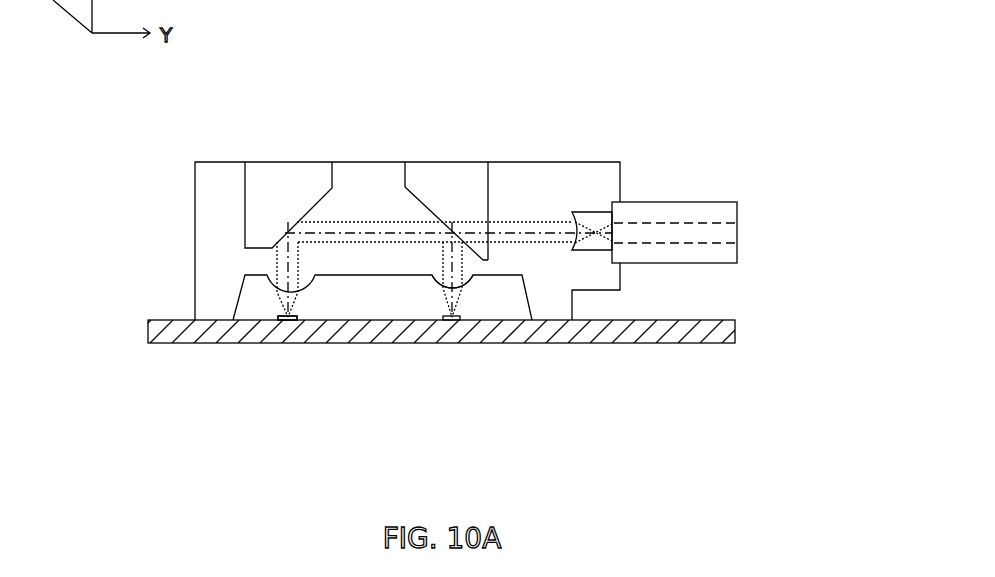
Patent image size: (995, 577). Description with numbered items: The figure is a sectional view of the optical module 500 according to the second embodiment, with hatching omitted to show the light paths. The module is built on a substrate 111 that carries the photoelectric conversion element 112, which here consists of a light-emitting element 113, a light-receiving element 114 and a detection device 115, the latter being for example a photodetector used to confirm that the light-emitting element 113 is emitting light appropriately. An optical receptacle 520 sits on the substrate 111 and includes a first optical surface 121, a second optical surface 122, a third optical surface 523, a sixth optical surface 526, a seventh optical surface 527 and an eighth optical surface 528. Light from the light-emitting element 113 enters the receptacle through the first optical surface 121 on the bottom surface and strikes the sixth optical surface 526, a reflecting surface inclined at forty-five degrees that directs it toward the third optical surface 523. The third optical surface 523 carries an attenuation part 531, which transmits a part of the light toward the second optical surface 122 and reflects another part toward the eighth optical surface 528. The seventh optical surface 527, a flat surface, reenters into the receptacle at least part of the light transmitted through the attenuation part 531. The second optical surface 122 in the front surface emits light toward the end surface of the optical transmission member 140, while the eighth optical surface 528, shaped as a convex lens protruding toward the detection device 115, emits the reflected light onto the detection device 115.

The optical module 500 is at (723, 58).
The optical receptacle 520 is at (196, 139).
The sixth optical surface 526 is at (322, 202).
The third optical surface 523 is at (420, 200).
The attenuation part 531 is at (448, 198).
The seventh optical surface 527 is at (490, 198).
The second optical surface 122 is at (569, 214).
The optical transmission member 140 is at (710, 243).
The first optical surface 121 is at (267, 283).
The eighth optical surface 528 is at (432, 298).
The substrate 111 is at (162, 340).
The light-emitting element 113 is at (290, 320).
The light-receiving element 114 is at (287, 318).
The detection device 115 is at (452, 320).
The photoelectric conversion element 112 is at (450, 418).